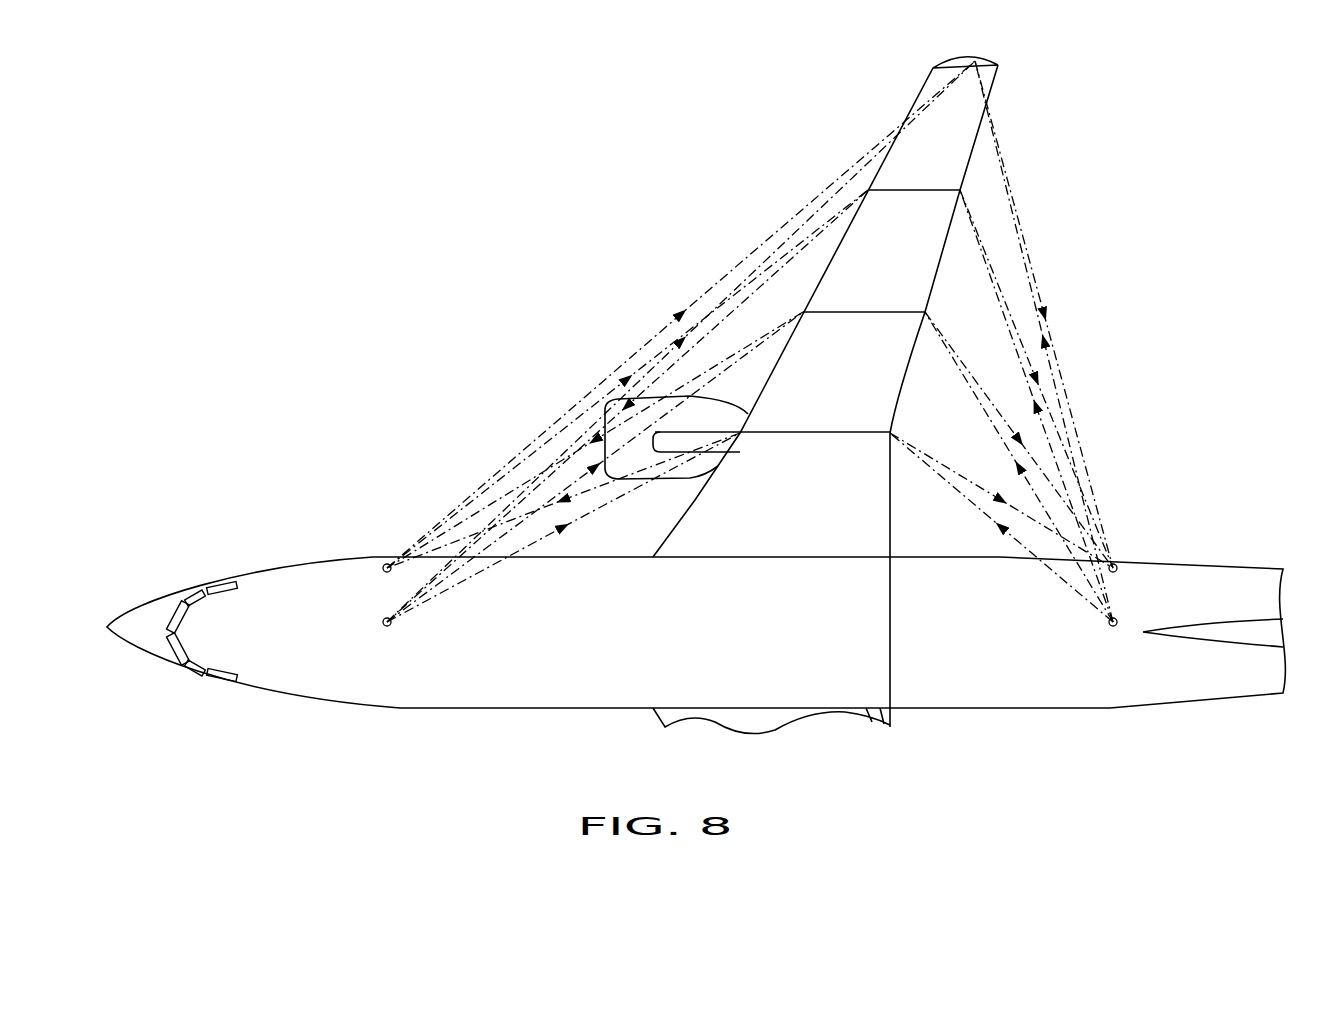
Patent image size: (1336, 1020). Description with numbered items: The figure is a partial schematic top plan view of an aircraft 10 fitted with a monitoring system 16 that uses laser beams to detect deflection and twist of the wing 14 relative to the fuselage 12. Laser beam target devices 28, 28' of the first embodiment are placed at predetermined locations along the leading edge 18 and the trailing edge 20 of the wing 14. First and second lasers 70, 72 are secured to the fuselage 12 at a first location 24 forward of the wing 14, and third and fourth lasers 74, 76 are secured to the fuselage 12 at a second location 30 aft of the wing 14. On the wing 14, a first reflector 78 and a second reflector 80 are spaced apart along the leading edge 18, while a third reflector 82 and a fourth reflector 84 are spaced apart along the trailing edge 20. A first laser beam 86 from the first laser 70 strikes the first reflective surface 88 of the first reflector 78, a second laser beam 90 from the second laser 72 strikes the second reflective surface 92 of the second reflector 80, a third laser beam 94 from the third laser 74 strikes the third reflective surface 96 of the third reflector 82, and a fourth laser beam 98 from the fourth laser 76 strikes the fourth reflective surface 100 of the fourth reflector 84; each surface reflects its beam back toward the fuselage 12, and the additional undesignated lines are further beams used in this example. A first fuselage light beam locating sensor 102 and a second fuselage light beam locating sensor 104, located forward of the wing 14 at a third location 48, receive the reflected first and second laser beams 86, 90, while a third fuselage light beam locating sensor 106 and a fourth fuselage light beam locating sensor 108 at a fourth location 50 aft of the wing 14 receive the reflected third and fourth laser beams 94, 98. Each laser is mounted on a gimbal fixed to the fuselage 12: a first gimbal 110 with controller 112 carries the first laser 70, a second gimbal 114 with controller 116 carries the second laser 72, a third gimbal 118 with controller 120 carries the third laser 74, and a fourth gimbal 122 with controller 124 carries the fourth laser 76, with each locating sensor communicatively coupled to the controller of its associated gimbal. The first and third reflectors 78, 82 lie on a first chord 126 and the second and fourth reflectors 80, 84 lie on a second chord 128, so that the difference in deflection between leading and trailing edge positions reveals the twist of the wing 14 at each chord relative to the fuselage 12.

The aircraft 10 is at (696, 395).
The fuselage 12 is at (760, 600).
The wing 14 is at (825, 392).
The monitoring system 16 is at (522, 287).
The leading edge 18 is at (755, 380).
The trailing edge 20 is at (900, 393).
The first location 24 is at (377, 613).
The laser beam target device 28 is at (872, 252).
The laser beam target device 28' is at (983, 280).
The second location 30 is at (1108, 572).
The third location 48 is at (370, 556).
The fourth location 50 is at (1112, 635).
The first laser 70 is at (378, 633).
The second laser 72 is at (378, 622).
The third laser 74 is at (1117, 582).
The fourth laser 76 is at (1125, 566).
The first reflector 78 is at (805, 324).
The second reflector 80 is at (868, 198).
The third reflector 82 is at (924, 306).
The fourth reflector 84 is at (957, 183).
The first laser beam 86 is at (510, 490).
The first reflective surface 88 is at (809, 320).
The second laser beam 90 is at (797, 242).
The second reflective surface 92 is at (862, 182).
The third laser beam 94 is at (965, 372).
The third reflective surface 96 is at (928, 309).
The fourth laser beam 98 is at (1000, 275).
The fourth reflective surface 100 is at (963, 183).
The first fuselage light beam locating sensor 102 is at (375, 570).
The second fuselage light beam locating sensor 104 is at (386, 548).
The third fuselage light beam locating sensor 106 is at (1108, 616).
The fourth fuselage light beam locating sensor 108 is at (1108, 625).
The first gimbal 110 is at (388, 641).
The controller 112 is at (395, 631).
The second gimbal 114 is at (400, 625).
The controller 116 is at (398, 620).
The third gimbal 118 is at (1117, 555).
The controller 120 is at (1122, 560).
The fourth gimbal 122 is at (1125, 572).
The controller 124 is at (1125, 578).
The first chord 126 is at (848, 313).
The second chord 128 is at (944, 189).